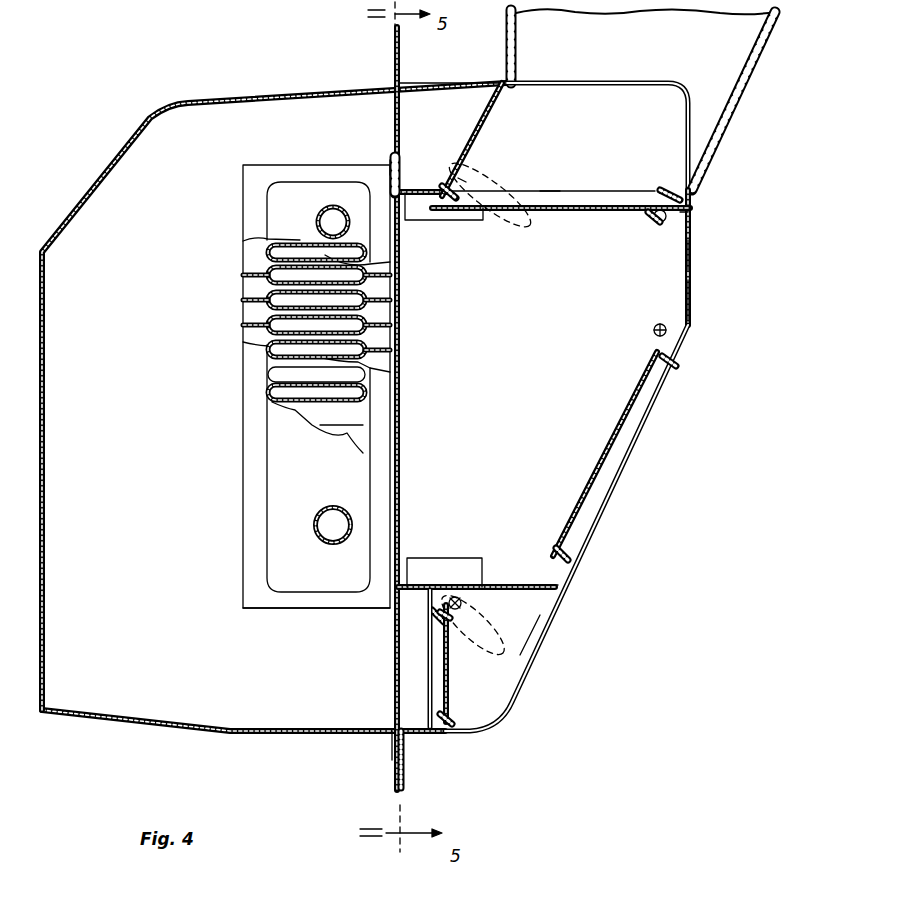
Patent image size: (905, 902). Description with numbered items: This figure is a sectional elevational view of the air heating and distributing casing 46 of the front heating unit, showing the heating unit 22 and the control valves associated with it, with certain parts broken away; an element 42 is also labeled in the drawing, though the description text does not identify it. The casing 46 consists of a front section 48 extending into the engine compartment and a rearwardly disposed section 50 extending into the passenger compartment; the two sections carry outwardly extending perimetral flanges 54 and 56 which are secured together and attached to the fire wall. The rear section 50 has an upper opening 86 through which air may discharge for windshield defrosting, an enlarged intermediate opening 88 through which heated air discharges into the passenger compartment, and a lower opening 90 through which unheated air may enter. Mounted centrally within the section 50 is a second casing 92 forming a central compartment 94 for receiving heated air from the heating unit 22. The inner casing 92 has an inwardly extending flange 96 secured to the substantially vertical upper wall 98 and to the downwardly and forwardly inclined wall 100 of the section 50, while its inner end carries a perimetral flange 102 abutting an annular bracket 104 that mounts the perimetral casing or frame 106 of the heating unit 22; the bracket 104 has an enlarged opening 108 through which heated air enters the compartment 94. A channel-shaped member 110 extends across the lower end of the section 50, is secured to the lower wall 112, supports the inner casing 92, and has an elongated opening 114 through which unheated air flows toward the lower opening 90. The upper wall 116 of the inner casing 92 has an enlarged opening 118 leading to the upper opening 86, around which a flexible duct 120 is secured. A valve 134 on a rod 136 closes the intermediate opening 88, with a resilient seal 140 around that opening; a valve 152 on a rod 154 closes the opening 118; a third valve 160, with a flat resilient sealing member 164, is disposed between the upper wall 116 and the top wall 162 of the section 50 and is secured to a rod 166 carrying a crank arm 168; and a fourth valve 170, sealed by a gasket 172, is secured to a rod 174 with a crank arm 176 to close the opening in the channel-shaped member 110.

The heating unit 22 is at (244, 205).
The aperture 42 is at (320, 512).
The casing 46 is at (333, 205).
The front section 48 is at (178, 736).
The rearwardly disposed section 50 is at (695, 258).
The perimetral flange 54 is at (395, 745).
The perimetral flange 56 is at (406, 748).
The upper opening 86 is at (620, 82).
The intermediate opening 88 is at (650, 412).
The lower opening 90 is at (522, 675).
The second casing 92 is at (503, 585).
The central compartment 94 is at (655, 303).
The inwardly extending flange 96 is at (678, 222).
The upper wall 98 is at (694, 232).
The inclined wall 100 is at (556, 587).
The perimetral flange 102 is at (400, 165).
The annular bracket 104 is at (390, 160).
The perimetral casing or frame 106 is at (380, 608).
The enlarged opening 108 is at (400, 228).
The channel-shaped member 110 is at (418, 622).
The lower wall 112 is at (465, 735).
The elongated opening 114 is at (422, 690).
The upper wall 116 is at (670, 190).
The enlarged opening 118 is at (550, 192).
The flexible duct 120 is at (738, 80).
The valve 134 is at (603, 445).
The rod 136 is at (652, 331).
The resilient seal 140 is at (676, 362).
The valve 152 is at (555, 214).
The rod 154 is at (652, 220).
The third valve 160 is at (490, 110).
The top wall 162 is at (430, 83).
The resilient sealing member 164 is at (468, 148).
The rod 166 is at (462, 183).
The crank arm 168 is at (518, 226).
The fourth valve 170 is at (448, 670).
The sealing gasket 172 is at (442, 603).
The rod 174 is at (457, 595).
The crank arm 176 is at (500, 620).